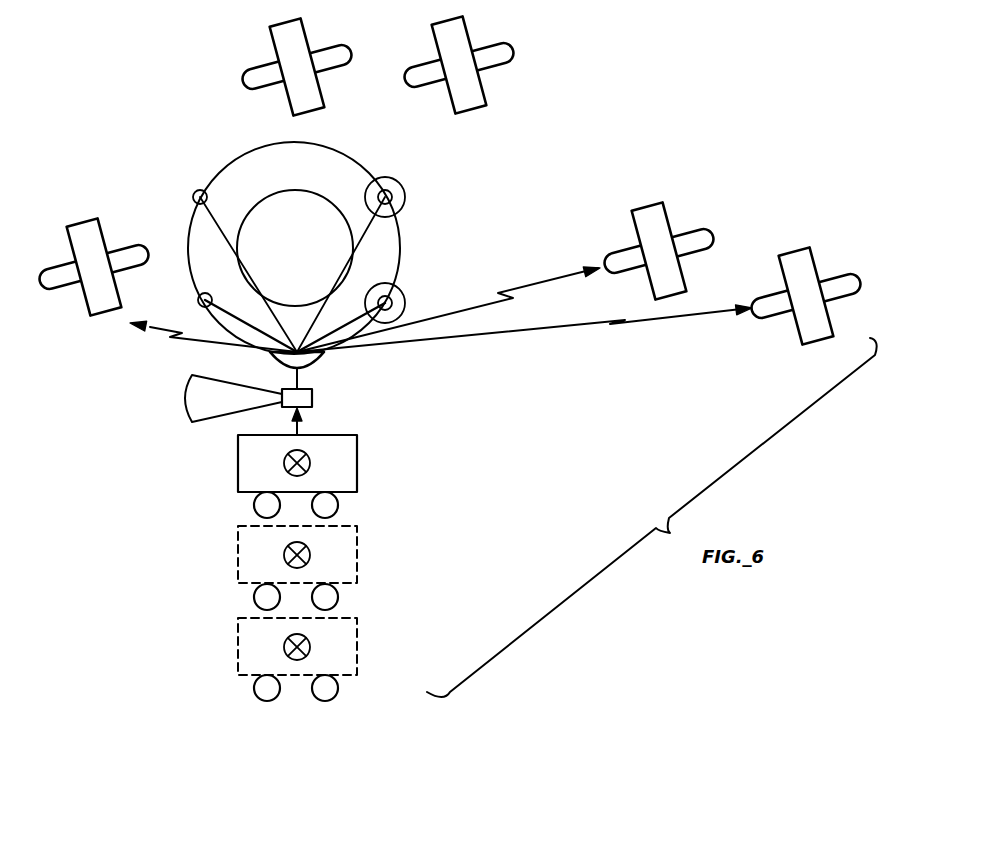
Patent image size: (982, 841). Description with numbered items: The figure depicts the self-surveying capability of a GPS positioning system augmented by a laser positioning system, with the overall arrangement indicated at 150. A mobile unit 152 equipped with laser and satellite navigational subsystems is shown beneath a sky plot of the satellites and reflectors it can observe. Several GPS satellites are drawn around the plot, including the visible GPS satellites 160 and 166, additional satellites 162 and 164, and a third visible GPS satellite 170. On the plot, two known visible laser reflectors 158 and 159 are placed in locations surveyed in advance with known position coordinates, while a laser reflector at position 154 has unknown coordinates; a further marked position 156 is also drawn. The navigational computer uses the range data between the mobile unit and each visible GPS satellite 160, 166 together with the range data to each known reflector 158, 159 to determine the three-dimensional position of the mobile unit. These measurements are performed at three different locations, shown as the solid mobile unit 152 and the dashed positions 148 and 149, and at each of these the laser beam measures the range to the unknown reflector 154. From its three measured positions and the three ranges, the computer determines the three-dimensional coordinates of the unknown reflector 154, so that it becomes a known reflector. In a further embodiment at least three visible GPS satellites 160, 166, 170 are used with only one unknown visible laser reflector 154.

The location 148 is at (310, 647).
The location 149 is at (310, 555).
The satellite positioning system arrangement 150 is at (172, 497).
The mobile unit 152 is at (310, 463).
The unknown visible laser reflector 154 is at (398, 292).
The selected satellite position in sky plot 156 is at (398, 182).
The known visible laser reflector 158 is at (195, 190).
The known visible laser reflector 159 is at (198, 297).
The visible GPS satellite 160 is at (80, 223).
The satellite 162 is at (318, 112).
The satellite 164 is at (472, 113).
The visible GPS satellite 166 is at (673, 217).
The visible GPS satellite 170 is at (790, 258).